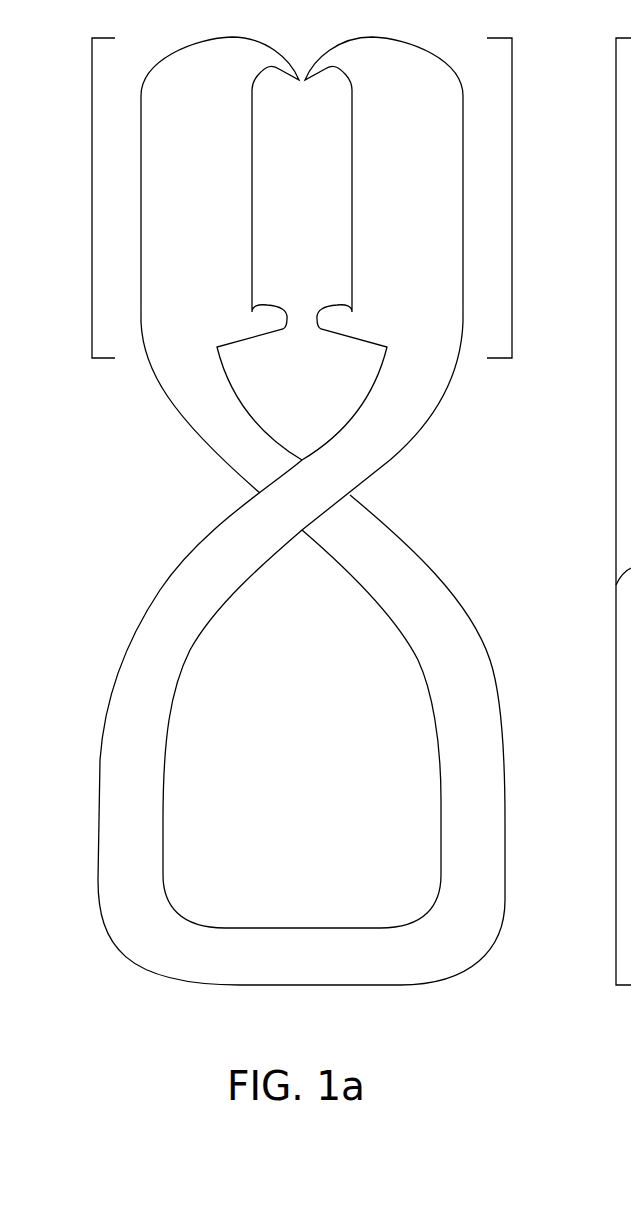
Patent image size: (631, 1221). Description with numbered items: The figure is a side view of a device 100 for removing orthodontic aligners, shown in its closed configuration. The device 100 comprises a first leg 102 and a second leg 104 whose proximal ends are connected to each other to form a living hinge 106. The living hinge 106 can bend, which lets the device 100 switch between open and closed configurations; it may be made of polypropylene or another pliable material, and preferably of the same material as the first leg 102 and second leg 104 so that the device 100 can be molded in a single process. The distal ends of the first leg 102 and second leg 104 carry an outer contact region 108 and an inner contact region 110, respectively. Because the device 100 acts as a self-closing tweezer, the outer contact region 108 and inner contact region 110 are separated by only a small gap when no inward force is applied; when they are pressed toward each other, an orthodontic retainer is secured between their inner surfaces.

The device 100 is at (303, 511).
The first leg 102 is at (450, 612).
The second leg 104 is at (152, 619).
The living hinge 106 is at (306, 940).
The outer contact region 108 is at (92, 190).
The inner contact region 110 is at (512, 199).